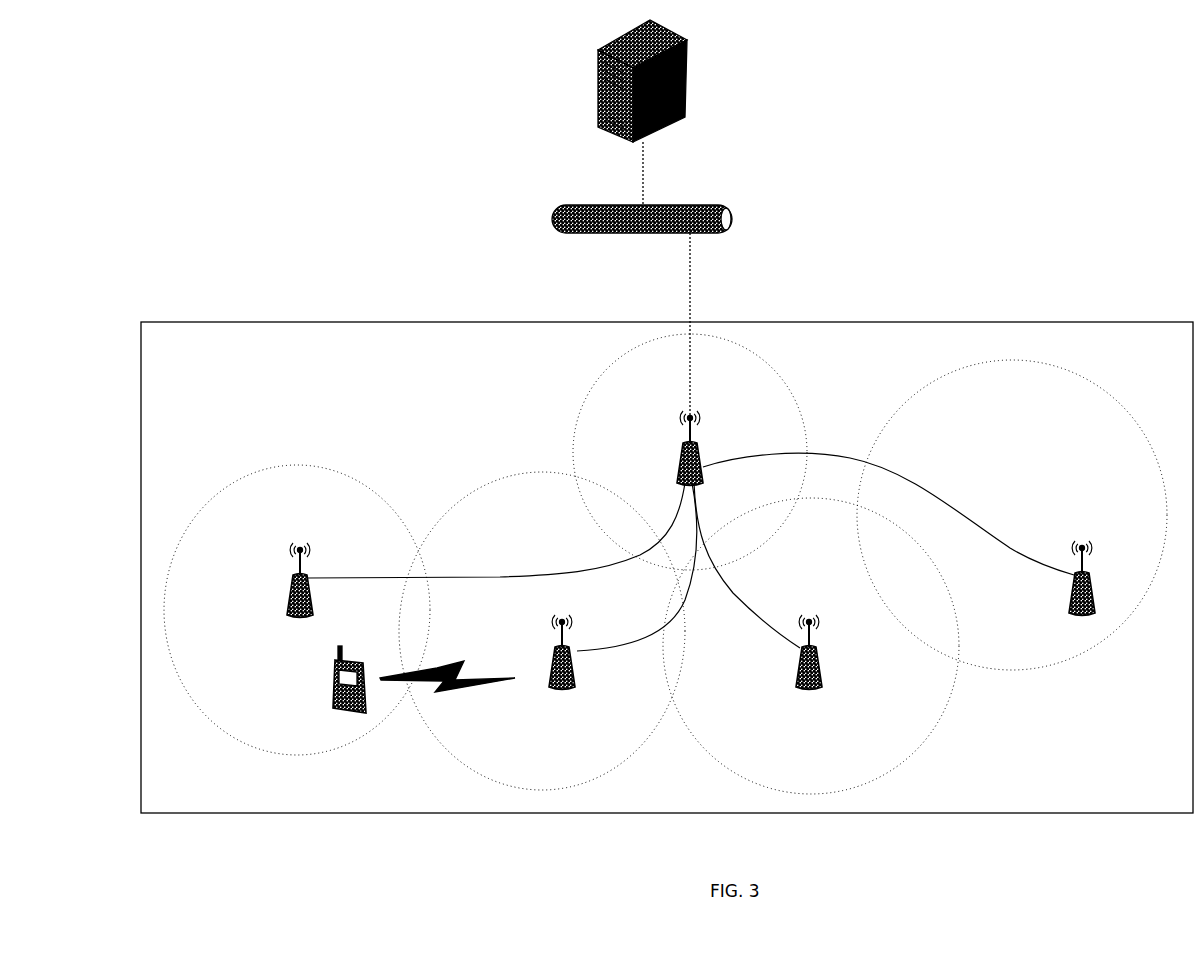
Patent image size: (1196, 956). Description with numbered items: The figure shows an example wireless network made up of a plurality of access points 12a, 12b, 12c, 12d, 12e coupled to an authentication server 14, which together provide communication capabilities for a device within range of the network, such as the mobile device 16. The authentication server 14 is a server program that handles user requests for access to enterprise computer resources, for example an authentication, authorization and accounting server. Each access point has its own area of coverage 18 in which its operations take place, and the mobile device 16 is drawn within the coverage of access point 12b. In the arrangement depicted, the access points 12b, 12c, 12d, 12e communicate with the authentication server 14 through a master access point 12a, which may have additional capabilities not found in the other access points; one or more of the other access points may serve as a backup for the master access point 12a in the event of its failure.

The authentication server 14 is at (697, 97).
The area of coverage 18 is at (357, 478).
The master access point 12a is at (695, 442).
The access point 12b is at (313, 542).
The access point 12c is at (555, 645).
The access point 12d is at (820, 660).
The access point 12e is at (1090, 570).
The mobile device 16 is at (363, 712).